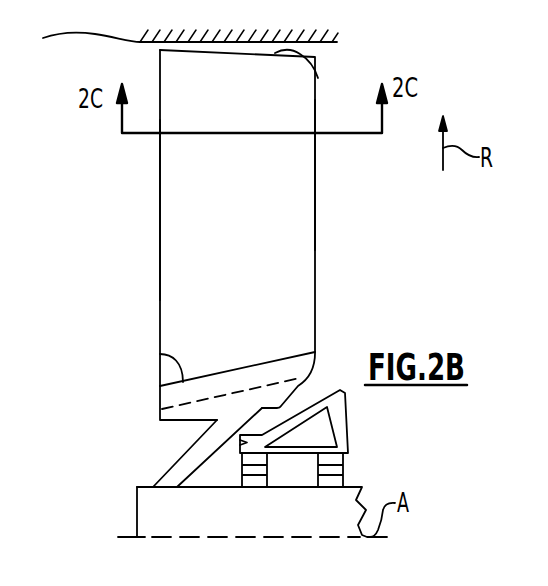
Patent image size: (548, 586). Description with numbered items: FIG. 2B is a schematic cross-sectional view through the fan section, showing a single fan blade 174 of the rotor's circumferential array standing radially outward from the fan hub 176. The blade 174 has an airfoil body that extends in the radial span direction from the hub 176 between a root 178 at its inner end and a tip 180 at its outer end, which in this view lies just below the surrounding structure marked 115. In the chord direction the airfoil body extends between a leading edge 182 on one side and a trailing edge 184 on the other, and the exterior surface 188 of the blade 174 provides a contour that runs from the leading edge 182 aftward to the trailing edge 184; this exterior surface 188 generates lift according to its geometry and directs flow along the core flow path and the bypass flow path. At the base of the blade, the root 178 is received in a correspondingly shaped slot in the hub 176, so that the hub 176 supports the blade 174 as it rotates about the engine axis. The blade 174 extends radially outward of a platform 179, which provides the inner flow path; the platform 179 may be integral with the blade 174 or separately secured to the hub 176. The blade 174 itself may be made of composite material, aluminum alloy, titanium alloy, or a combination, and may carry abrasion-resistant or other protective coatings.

The outer wall 115 is at (140, 40).
The fan blade 174 is at (340, 257).
The fan hub 176 is at (186, 470).
The root 178 is at (160, 396).
The platform 179 is at (162, 354).
The tip 180 is at (318, 78).
The leading edge 182 is at (160, 207).
The trailing edge 184 is at (315, 172).
The exterior surface 188 is at (292, 229).